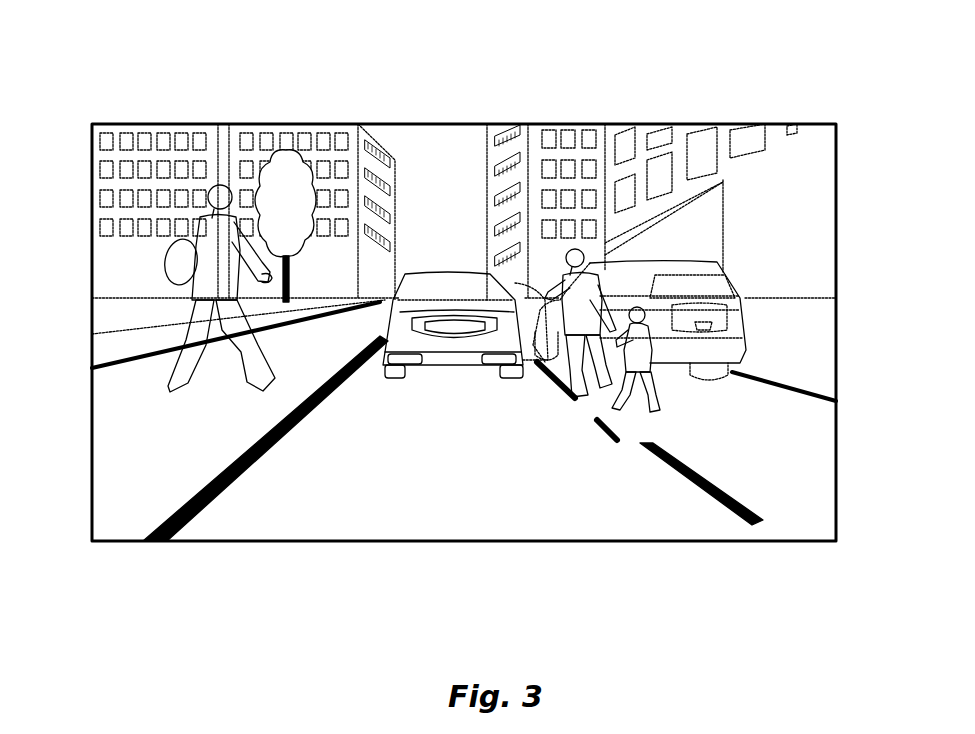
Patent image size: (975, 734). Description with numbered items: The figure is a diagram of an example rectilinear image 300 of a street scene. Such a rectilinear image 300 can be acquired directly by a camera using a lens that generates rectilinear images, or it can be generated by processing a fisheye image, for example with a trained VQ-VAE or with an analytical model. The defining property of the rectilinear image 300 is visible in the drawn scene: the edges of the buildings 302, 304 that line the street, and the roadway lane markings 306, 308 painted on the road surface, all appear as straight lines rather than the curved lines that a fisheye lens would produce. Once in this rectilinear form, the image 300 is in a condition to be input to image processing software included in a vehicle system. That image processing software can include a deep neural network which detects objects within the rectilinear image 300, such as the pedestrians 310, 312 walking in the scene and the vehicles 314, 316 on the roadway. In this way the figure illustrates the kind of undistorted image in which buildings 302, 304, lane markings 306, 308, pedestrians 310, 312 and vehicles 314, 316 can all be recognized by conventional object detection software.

The rectilinear image 300 is at (290, 123).
The building 302 is at (405, 188).
The building 304 is at (475, 172).
The roadway lane marking 306 is at (247, 480).
The roadway lane marking 308 is at (683, 493).
The pedestrian 310 is at (158, 375).
The pedestrian 312 is at (668, 393).
The vehicle 314 is at (465, 386).
The vehicle 316 is at (760, 318).